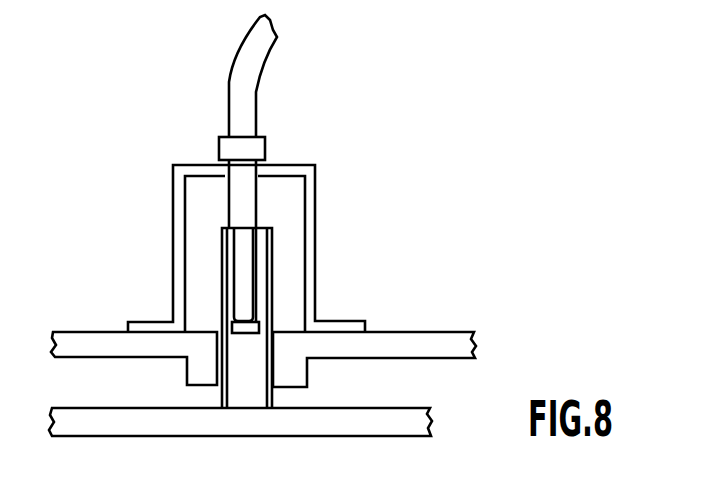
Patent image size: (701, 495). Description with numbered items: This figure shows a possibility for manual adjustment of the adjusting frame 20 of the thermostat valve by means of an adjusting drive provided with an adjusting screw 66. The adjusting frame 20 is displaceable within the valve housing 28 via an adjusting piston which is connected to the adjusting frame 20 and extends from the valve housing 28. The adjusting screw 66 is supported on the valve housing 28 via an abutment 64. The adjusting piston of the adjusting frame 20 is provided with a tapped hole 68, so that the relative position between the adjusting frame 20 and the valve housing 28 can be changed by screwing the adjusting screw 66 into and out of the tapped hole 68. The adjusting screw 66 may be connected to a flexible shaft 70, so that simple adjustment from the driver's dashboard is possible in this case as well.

The adjusting frame 20 is at (423, 426).
The valve housing 28 is at (430, 341).
The abutment 64 is at (310, 204).
The adjusting screw 66 is at (258, 150).
The tapped hole 68 is at (255, 284).
The flexible shaft 70 is at (248, 84).